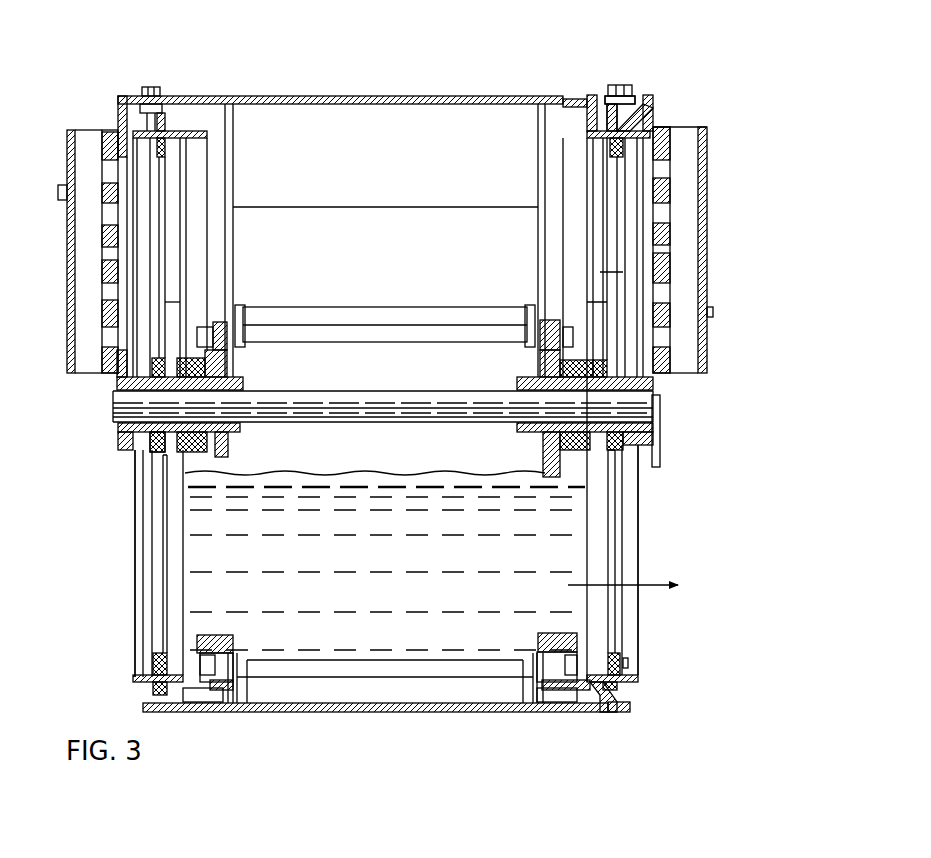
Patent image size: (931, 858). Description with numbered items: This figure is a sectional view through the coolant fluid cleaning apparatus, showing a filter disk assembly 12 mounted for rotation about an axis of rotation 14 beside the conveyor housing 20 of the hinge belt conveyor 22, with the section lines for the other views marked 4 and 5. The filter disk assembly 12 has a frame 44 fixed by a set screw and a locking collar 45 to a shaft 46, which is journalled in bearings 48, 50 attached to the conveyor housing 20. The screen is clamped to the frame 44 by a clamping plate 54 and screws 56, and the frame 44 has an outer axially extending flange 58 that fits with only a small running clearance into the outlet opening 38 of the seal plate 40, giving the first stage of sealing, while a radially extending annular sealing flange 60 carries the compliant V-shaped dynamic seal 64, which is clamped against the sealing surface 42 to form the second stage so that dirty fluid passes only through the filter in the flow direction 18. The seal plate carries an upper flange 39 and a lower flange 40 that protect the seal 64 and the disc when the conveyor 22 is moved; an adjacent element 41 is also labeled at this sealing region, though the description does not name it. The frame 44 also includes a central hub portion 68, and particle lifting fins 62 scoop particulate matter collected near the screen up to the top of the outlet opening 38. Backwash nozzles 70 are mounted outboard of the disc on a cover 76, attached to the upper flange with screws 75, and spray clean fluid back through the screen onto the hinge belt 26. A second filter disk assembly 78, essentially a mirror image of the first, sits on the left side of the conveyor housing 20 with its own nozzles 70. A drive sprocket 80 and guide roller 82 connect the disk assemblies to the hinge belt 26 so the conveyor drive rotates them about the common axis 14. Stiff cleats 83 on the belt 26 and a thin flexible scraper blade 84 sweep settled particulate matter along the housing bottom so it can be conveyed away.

The filter disk assembly 12 is at (638, 76).
The axis of rotation 14 is at (375, 405).
The direction of fluid flow 18 is at (650, 578).
The conveyor housing 20 is at (590, 713).
The hinge belt conveyor 22 is at (214, 715).
The hinge belt 26 is at (313, 660).
The outlet opening 38 is at (572, 124).
The upper flange 39 is at (598, 98).
The seal plate 40 is at (608, 713).
The bottom block 41 is at (606, 692).
The sealing surface 42 is at (617, 692).
The frame 44 is at (634, 615).
The locking collar 45 is at (657, 402).
The shaft 46 is at (450, 420).
The bearing 48 is at (600, 437).
The bearing 50 is at (164, 436).
The clamping plate 54 is at (621, 658).
The screws 56 is at (629, 663).
The outer axially extending flange 58 is at (655, 122).
The radially extending annular sealing flange 60 is at (645, 105).
The particle lifting fins 62 is at (604, 272).
The V-shaped dynamic seal 64 is at (614, 686).
The central hub portion 68 is at (628, 365).
The backwash nozzles 70 is at (105, 172).
The screws 75 is at (613, 84).
The cover 76 is at (650, 128).
The second filter disk assembly 78 is at (126, 629).
The drive sprocket 80 is at (553, 480).
The guide roller 82 is at (220, 460).
The cleats 83 is at (415, 315).
The scraper blade 84 is at (315, 688).
The section line 4 is at (815, 195).
The section line 5 is at (565, 96).